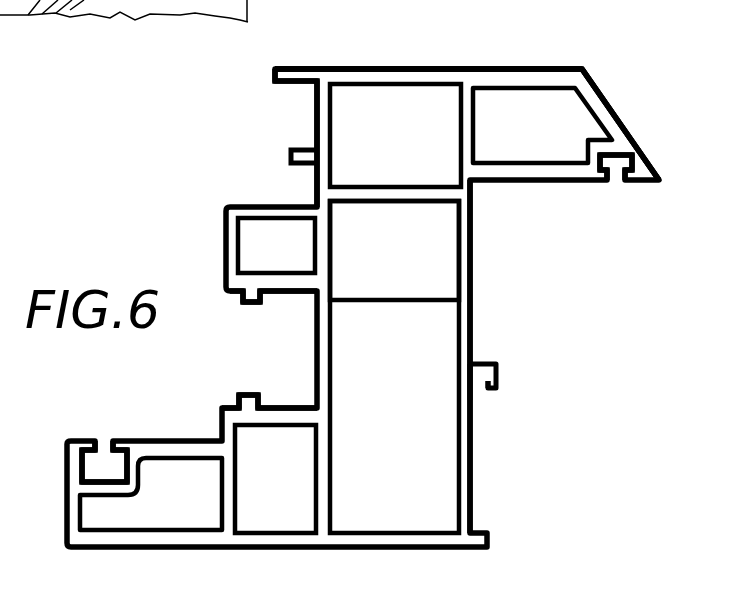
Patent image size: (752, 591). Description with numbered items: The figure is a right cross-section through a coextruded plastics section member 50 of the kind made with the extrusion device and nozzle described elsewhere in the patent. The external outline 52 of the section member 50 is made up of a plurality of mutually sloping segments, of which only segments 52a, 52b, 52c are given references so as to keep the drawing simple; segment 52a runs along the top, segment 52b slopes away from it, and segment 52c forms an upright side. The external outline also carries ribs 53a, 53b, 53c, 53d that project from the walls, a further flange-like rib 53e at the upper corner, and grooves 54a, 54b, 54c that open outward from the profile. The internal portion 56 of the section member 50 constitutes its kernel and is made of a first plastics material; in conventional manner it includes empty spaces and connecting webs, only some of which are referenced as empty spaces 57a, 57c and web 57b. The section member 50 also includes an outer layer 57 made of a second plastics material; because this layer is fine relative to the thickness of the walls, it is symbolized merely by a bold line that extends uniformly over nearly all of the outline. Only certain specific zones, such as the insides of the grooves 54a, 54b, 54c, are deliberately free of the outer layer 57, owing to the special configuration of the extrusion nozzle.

The section member 50 is at (492, 323).
The external outline 52 is at (476, 56).
The segment 52a is at (408, 67).
The segment 52b is at (620, 120).
The segment 52c is at (473, 282).
The rib 53a is at (500, 372).
The rib 53b is at (267, 376).
The rib 53c is at (248, 298).
The rib 53d is at (289, 156).
The flange 53e is at (284, 64).
The groove 54a is at (617, 174).
The groove 54b is at (102, 460).
The groove 54c is at (477, 385).
The internal portion 56 is at (394, 367).
The outer layer 57 is at (584, 70).
The empty space 57a is at (466, 143).
The connecting web 57b is at (326, 250).
The empty space 57c is at (326, 470).